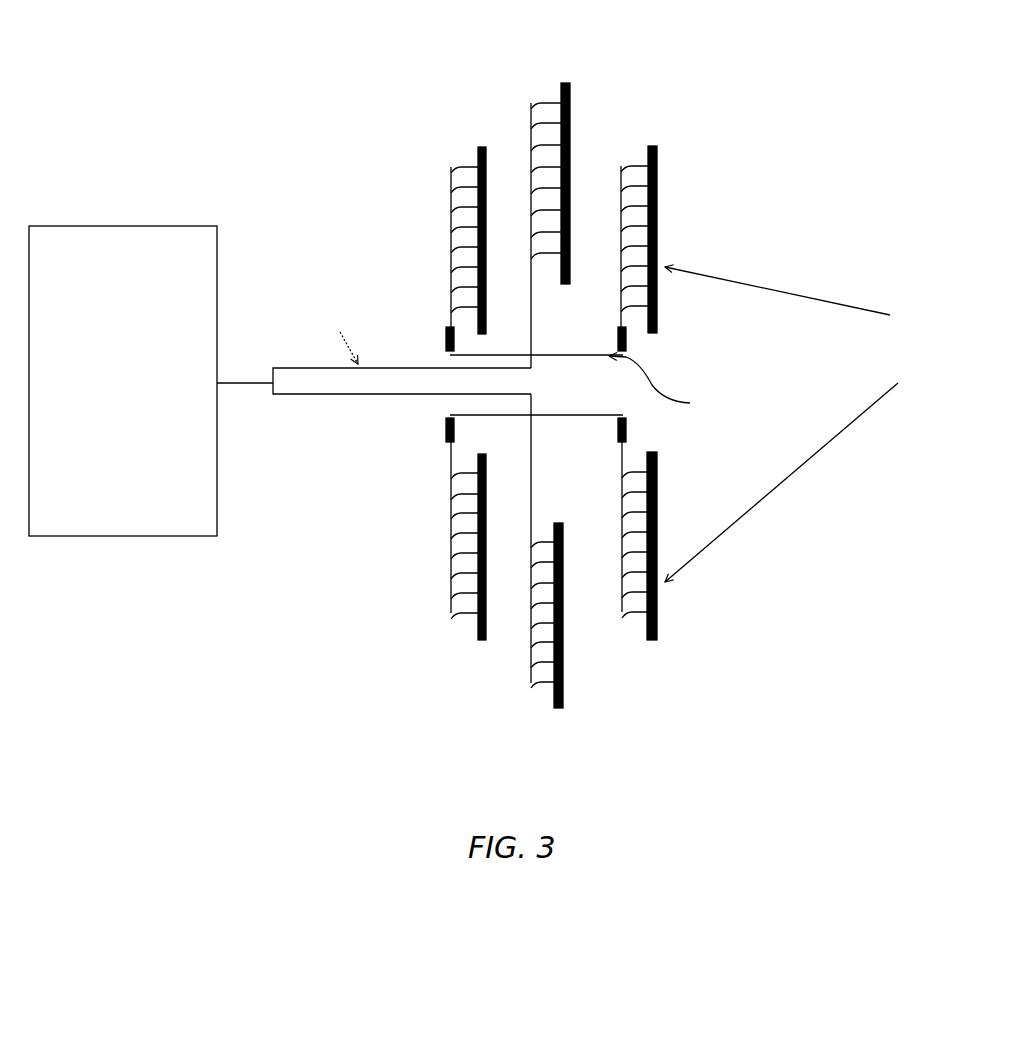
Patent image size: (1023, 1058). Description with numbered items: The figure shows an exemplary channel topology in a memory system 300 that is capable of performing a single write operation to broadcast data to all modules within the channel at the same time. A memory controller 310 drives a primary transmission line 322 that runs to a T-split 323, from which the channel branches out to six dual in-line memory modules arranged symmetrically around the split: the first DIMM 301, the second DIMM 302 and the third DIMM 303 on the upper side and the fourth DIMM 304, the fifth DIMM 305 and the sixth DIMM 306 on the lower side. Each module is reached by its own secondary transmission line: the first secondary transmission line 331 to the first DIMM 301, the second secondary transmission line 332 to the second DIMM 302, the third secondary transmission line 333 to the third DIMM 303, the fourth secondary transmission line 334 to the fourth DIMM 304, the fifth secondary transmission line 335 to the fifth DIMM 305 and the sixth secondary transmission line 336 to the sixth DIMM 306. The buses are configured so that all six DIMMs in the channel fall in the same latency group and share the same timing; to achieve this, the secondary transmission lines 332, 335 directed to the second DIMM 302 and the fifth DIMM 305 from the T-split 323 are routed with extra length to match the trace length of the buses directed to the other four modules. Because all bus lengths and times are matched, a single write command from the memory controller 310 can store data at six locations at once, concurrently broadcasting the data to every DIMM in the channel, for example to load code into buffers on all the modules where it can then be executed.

The memory system 300 is at (1007, 63).
The DIMM 1 301 is at (657, 187).
The DIMM 2 302 is at (571, 108).
The DIMM 3 303 is at (478, 149).
The DIMM 4 304 is at (486, 640).
The DIMM 5 305 is at (563, 672).
The DIMM 6 306 is at (657, 597).
The memory controller 310 is at (144, 421).
The primary transmission line 322 is at (313, 352).
The T-split 323 is at (603, 396).
The secondary transmission line to DIMM 1 331 is at (560, 355).
The secondary transmission line to DIMM 2 332 is at (530, 279).
The secondary transmission line to DIMM 3 333 is at (498, 355).
The secondary transmission line to DIMM 4 334 is at (492, 415).
The secondary transmission line to DIMM 5 335 is at (533, 520).
The secondary transmission line to DIMM 6 336 is at (558, 415).